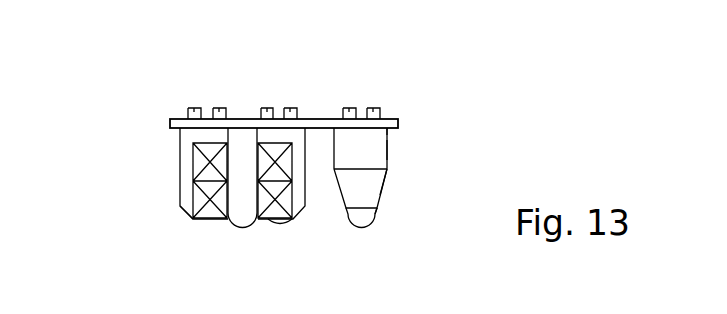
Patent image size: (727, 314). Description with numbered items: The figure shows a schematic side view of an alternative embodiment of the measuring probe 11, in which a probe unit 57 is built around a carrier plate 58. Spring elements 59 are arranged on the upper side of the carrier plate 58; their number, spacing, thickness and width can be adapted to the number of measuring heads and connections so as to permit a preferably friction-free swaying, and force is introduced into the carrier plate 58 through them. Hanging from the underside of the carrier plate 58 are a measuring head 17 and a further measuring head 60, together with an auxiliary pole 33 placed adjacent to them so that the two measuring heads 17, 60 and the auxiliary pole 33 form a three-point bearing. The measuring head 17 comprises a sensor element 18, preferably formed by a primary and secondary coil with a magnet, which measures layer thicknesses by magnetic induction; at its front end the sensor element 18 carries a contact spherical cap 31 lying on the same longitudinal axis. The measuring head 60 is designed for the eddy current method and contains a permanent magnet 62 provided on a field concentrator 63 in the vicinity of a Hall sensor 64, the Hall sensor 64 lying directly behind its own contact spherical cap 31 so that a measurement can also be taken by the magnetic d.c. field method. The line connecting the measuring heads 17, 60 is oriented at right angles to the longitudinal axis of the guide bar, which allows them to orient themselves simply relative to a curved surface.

The measuring probe 11 is at (148, 149).
The measuring head 17 is at (165, 215).
The sensor element 18 is at (205, 222).
The contact spherical cap 31 is at (242, 218).
The auxiliary pole 33 is at (270, 219).
The probe unit 57 is at (376, 85).
The carrier plate 58 is at (320, 119).
The spring elements 59 is at (218, 108).
The measuring head 60 is at (402, 135).
The permanent magnet 62 is at (395, 146).
The field concentrator 63 is at (395, 186).
The Hall sensor 64 is at (383, 209).